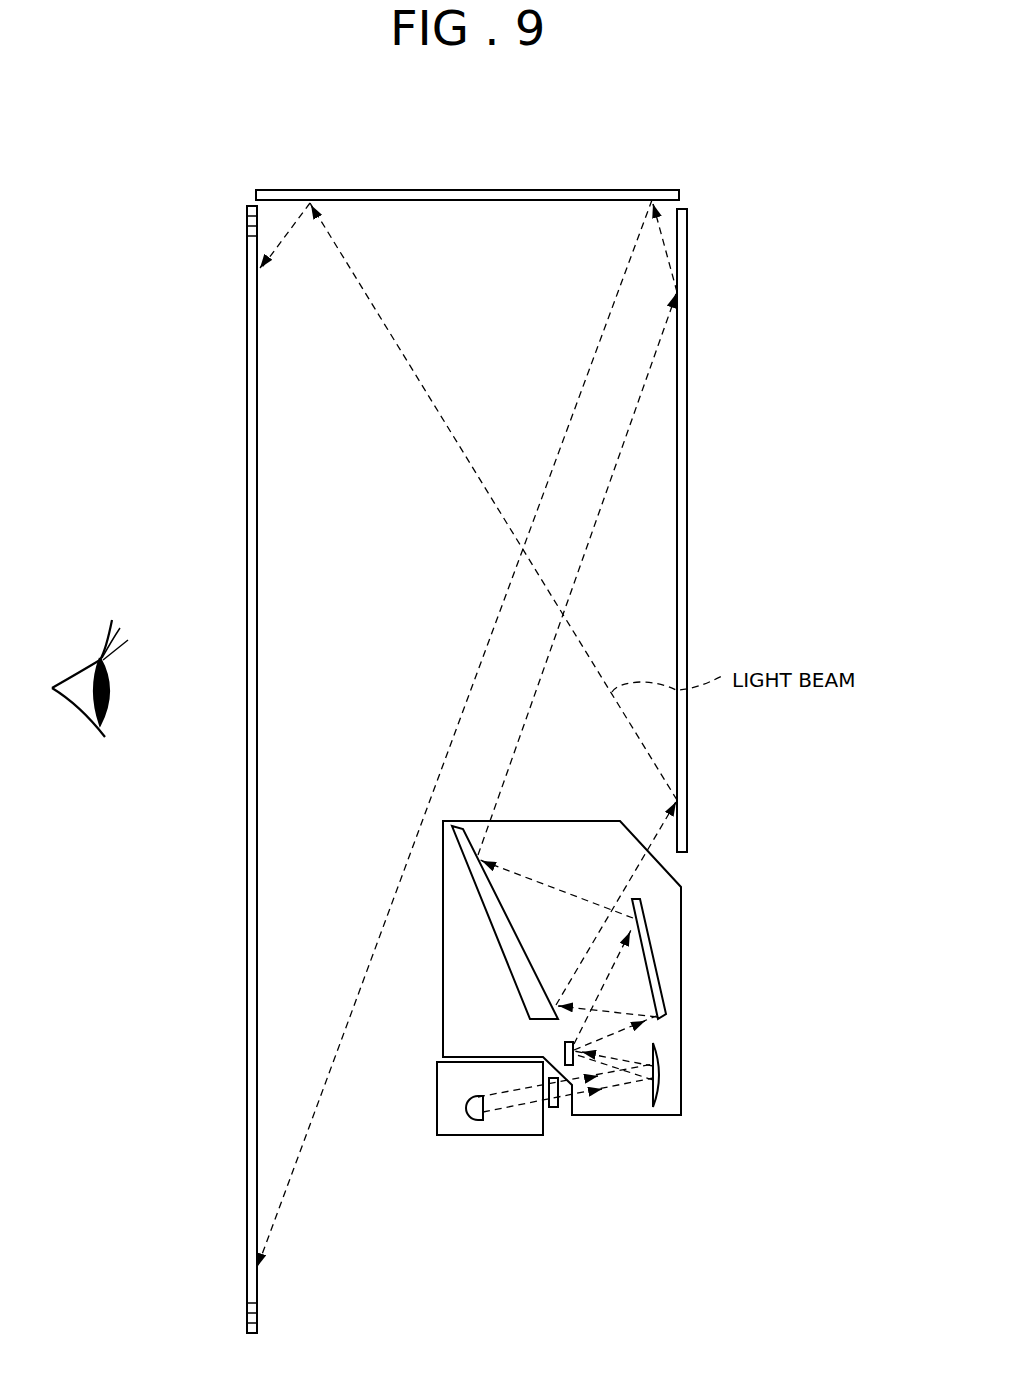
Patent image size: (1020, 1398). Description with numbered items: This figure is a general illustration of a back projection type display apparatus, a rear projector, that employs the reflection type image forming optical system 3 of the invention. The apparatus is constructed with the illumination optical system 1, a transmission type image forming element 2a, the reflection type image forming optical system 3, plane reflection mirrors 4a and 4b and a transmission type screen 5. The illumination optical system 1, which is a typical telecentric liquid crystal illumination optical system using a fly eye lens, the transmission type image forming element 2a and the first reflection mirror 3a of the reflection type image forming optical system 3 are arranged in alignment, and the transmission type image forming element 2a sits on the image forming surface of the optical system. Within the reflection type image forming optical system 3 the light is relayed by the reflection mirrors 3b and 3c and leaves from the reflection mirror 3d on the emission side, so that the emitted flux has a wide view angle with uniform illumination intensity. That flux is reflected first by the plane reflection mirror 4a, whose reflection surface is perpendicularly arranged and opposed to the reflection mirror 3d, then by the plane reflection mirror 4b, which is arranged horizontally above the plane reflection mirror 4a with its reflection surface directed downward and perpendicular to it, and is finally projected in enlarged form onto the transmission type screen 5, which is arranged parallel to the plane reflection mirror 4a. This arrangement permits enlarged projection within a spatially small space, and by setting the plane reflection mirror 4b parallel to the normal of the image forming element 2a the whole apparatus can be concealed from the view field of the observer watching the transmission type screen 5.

The illumination optical system 1 is at (483, 1136).
The transmission type image forming element 2a is at (553, 1108).
The reflection type image forming optical system 3 is at (683, 1008).
The first reflection mirror 3a is at (660, 1076).
The reflection mirror 3b is at (565, 1050).
The reflection mirror 3c is at (650, 948).
The reflection mirror on emission side 3d is at (515, 950).
The plane reflection mirror 4a is at (688, 437).
The plane reflection mirror 4b is at (530, 190).
The transmission type screen 5 is at (247, 445).